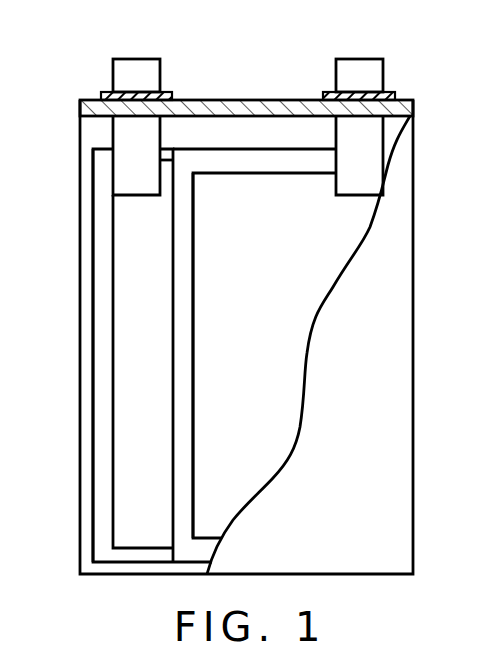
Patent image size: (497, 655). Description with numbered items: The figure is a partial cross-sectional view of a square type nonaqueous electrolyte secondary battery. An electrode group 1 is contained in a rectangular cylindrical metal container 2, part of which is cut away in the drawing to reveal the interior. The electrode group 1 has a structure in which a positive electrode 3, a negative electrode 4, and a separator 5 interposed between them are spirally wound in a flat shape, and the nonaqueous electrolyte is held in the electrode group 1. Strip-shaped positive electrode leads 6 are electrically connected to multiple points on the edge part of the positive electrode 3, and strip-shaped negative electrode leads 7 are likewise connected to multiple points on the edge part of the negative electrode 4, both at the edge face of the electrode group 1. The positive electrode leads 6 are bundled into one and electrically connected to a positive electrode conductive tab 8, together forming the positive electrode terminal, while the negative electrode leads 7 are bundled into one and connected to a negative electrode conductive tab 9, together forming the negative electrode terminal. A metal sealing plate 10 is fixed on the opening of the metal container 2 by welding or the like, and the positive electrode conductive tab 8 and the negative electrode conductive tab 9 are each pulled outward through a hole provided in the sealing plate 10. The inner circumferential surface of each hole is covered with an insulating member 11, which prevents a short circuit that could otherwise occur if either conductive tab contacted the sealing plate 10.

The electrode group 1 is at (290, 146).
The metal container 2 is at (403, 430).
The positive electrode 3 is at (122, 318).
The negative electrode 4 is at (232, 210).
The separator 5 is at (182, 415).
The positive electrode leads 6 is at (120, 137).
The negative electrode leads 7 is at (375, 143).
The positive electrode conductive tab 8 is at (133, 69).
The negative electrode conductive tab 9 is at (365, 69).
The sealing plate 10 is at (92, 101).
The insulating member 11 is at (165, 92).